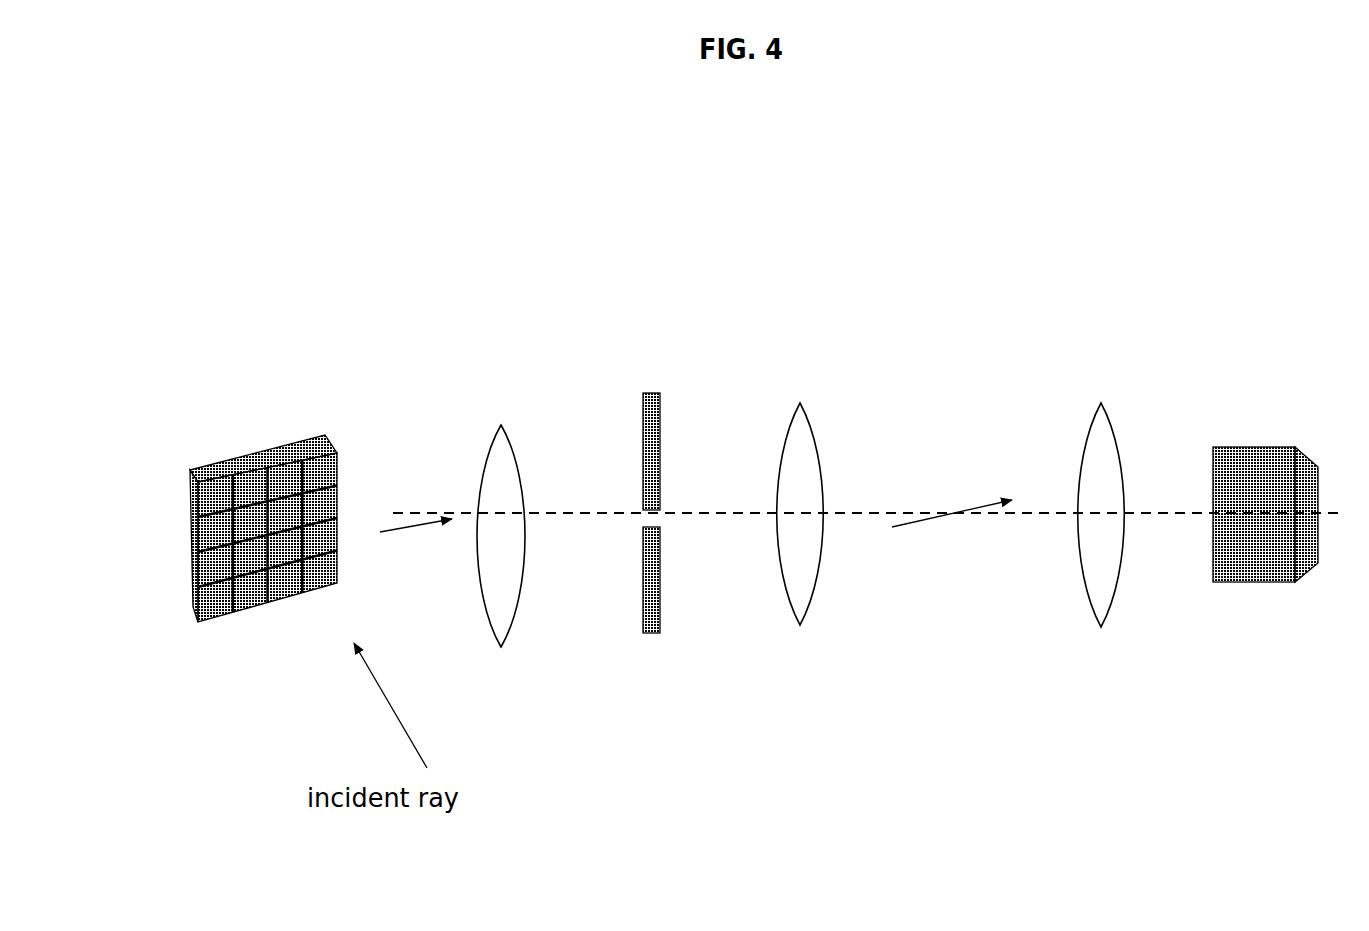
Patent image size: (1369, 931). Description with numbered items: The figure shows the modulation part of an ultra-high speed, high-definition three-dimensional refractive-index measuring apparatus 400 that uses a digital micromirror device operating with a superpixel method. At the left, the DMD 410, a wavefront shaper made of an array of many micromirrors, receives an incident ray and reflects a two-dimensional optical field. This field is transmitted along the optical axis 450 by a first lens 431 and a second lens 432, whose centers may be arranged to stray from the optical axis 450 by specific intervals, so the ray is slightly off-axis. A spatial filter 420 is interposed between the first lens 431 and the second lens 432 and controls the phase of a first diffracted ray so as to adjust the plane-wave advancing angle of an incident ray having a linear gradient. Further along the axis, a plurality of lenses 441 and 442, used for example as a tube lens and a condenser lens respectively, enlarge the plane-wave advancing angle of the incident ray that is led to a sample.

The 3D refractive-index measuring apparatus 400 is at (171, 330).
The DMD 410 is at (307, 440).
The spatial filter 420 is at (650, 392).
The first lens 431 is at (501, 648).
The second lens 432 is at (801, 626).
The lens 441 is at (1102, 627).
The lens 442 is at (1237, 447).
The optical axis 450 is at (718, 480).